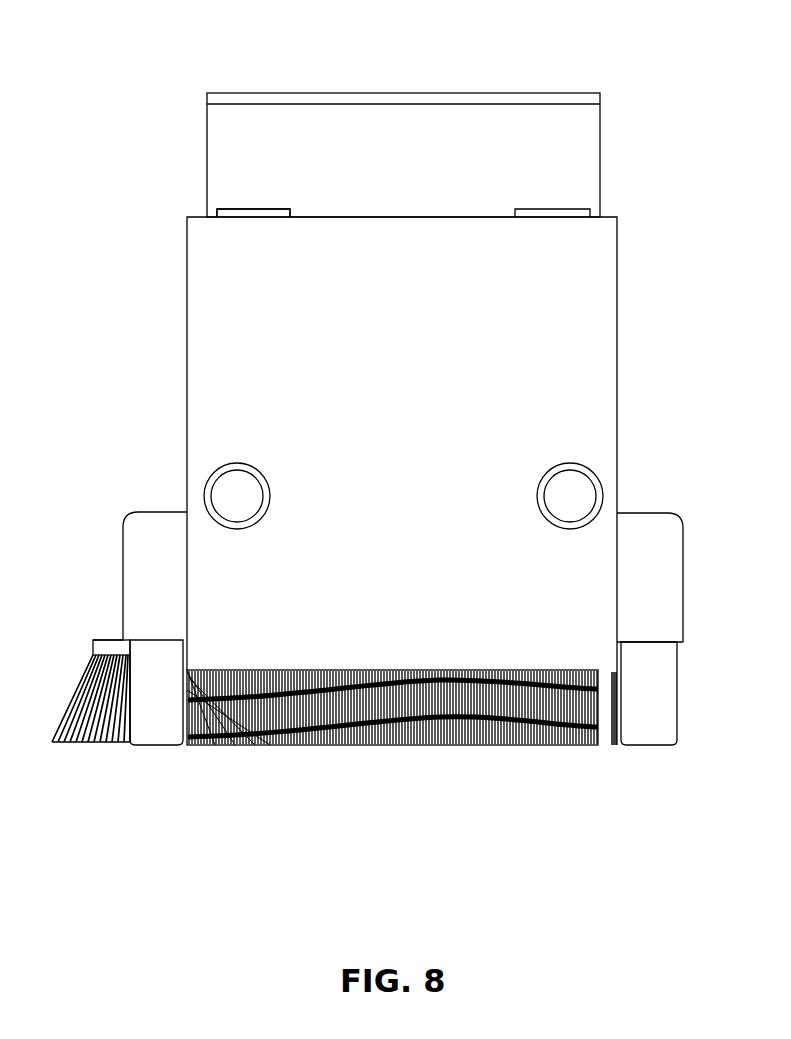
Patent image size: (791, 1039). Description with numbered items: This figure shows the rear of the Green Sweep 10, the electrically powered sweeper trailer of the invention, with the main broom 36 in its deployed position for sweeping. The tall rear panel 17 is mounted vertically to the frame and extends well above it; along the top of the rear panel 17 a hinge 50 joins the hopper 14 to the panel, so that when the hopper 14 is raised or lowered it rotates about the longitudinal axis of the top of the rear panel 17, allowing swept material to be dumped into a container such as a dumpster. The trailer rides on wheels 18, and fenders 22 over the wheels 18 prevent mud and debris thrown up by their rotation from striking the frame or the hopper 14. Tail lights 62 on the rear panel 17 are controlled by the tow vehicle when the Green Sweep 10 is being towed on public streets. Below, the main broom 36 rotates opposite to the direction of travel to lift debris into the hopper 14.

The Green Sweep 10 is at (613, 72).
The hopper 14 is at (583, 184).
The rear panel 17 is at (417, 353).
The hinge 50 is at (253, 217).
The tail lights 62 is at (237, 463).
The fenders 22 is at (142, 522).
The wheels 18 is at (156, 740).
The main broom 36 is at (440, 746).